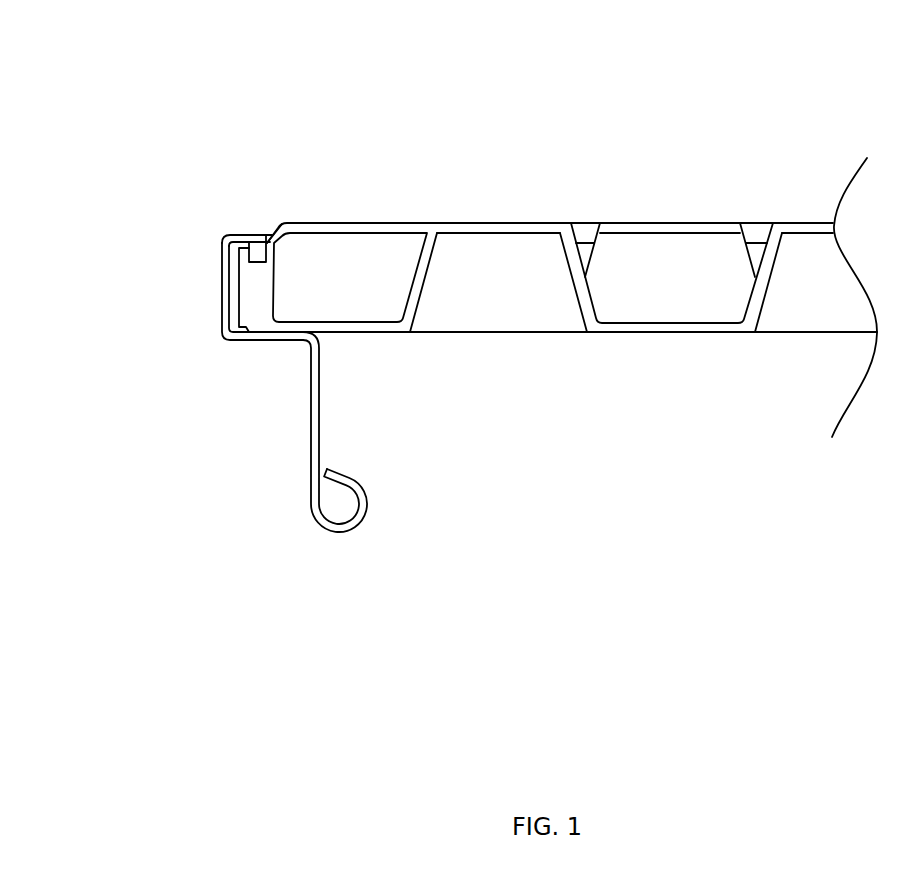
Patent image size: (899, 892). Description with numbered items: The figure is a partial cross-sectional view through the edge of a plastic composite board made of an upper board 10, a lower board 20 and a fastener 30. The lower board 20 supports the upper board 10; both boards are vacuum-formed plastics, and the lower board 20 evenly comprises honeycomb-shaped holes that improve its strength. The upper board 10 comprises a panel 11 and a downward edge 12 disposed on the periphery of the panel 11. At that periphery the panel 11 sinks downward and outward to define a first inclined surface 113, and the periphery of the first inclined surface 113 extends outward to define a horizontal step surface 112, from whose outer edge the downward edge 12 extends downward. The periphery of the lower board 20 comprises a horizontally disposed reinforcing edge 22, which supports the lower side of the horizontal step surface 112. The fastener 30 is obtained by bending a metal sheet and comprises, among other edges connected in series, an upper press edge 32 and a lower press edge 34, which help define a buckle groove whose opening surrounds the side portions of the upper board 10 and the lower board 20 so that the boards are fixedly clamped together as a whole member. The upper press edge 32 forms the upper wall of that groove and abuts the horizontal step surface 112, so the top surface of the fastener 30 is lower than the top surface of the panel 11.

The upper board 10 is at (461, 229).
The panel 11 is at (388, 232).
The horizontal step surface 112 is at (250, 237).
The first inclined surface 113 is at (279, 241).
The downward edge 12 is at (236, 284).
The lower board 20 is at (633, 342).
The reinforcing edge 22 is at (270, 236).
The fastener 30 is at (216, 312).
The upper press edge 32 is at (243, 238).
The lower press edge 34 is at (265, 341).